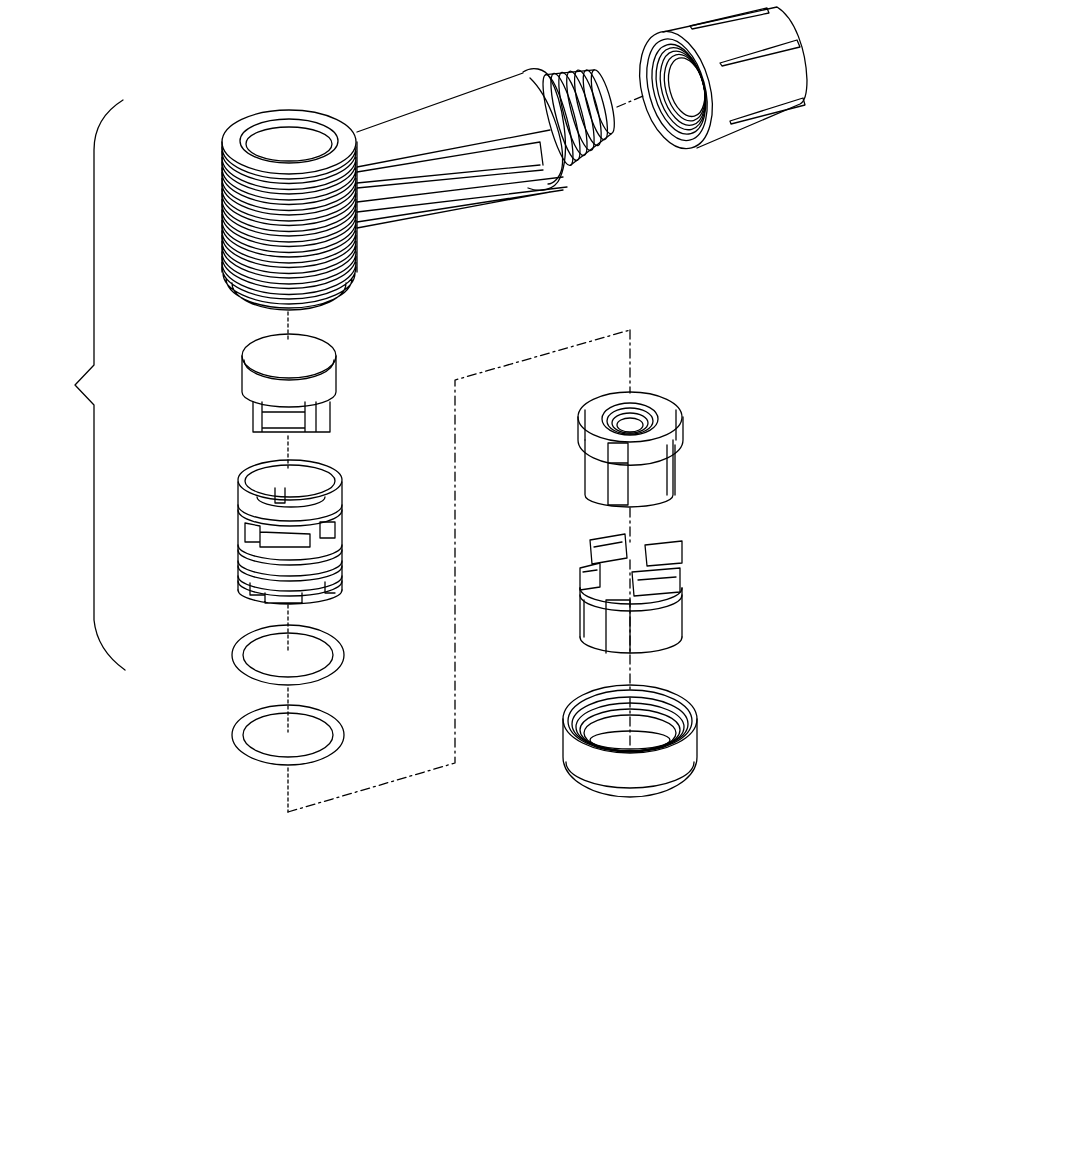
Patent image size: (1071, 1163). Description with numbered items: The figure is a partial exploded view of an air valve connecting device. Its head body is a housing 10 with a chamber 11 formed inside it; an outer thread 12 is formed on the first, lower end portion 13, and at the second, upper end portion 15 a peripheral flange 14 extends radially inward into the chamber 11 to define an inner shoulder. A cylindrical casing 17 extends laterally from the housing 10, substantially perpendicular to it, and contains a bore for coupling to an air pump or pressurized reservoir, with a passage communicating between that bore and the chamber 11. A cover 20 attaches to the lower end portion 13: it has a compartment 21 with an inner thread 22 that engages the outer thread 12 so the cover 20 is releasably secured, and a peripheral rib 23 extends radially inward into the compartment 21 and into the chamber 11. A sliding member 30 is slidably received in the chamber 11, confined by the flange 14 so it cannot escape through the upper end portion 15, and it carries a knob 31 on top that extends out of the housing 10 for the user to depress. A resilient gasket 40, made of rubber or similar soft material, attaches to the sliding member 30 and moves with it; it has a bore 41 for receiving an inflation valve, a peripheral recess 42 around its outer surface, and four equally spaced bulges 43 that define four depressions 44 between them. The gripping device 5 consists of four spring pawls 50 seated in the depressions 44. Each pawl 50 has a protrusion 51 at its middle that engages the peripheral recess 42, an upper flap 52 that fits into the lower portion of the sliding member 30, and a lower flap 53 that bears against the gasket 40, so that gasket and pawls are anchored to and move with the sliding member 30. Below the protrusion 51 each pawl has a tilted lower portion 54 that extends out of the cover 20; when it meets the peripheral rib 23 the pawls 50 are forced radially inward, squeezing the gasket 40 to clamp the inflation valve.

The gripping device 5 is at (706, 560).
The housing 10 is at (472, 519).
The chamber 11 is at (292, 143).
The outer thread 12 is at (238, 297).
The first end portion 13 is at (223, 255).
The peripheral flange 14 is at (252, 125).
The second end portion 15 is at (222, 146).
The cylindrical casing 17 is at (443, 128).
The cover 20 is at (638, 751).
The compartment 21 is at (565, 720).
The inner thread 22 is at (680, 692).
The peripheral rib 23 is at (610, 742).
The sliding member 30 is at (238, 505).
The knob 31 is at (320, 386).
The gasket 40 is at (635, 433).
The bore 41 is at (612, 418).
The peripheral recess 42 is at (650, 460).
The bulges 43 is at (684, 460).
The depressions 44 is at (590, 478).
The pawls 50 is at (638, 595).
The protrusion 51 is at (625, 585).
The flap 52 is at (590, 578).
The flap 53 is at (612, 658).
The lower portion 54 is at (585, 628).